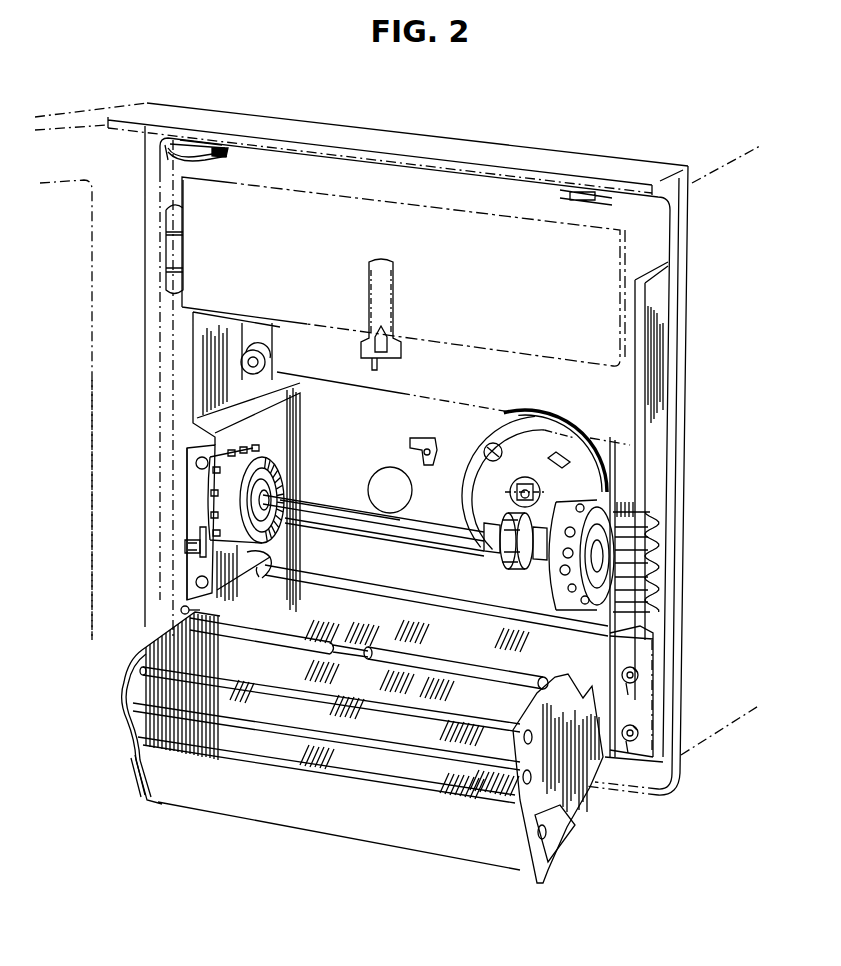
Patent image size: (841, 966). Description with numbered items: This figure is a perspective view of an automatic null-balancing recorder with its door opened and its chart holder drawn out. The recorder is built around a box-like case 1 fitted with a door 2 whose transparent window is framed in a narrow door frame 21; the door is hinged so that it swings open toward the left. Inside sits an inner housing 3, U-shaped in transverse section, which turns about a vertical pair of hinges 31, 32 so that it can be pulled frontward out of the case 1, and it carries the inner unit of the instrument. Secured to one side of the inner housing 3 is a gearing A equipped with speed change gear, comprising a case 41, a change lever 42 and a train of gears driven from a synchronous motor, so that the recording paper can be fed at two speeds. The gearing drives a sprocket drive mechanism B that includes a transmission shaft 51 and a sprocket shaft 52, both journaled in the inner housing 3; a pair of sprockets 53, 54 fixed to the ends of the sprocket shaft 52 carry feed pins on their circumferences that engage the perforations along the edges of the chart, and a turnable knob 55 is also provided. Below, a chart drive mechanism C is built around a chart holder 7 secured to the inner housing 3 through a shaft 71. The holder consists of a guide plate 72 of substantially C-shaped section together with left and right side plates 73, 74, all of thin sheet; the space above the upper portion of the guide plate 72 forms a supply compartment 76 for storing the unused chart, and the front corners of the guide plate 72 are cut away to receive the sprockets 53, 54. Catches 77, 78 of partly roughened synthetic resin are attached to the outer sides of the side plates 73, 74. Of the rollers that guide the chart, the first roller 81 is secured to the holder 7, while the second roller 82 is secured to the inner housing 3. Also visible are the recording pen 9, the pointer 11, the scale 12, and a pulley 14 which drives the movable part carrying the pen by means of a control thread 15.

The case 1 is at (193, 110).
The door 2 is at (80, 110).
The inner housing 3 is at (655, 318).
The chart holder 7 is at (363, 812).
The recording pen 9 is at (355, 359).
The pointer 11 is at (396, 272).
The scale 12 is at (277, 200).
The pulley 14 is at (544, 406).
The control thread 15 is at (437, 395).
The door frame 21 is at (92, 372).
The hinge 31 is at (184, 252).
The hinge 32 is at (181, 608).
The case 41 is at (187, 520).
The change lever 42 is at (185, 548).
The transmission shaft 51 is at (408, 540).
The sprocket shaft 52 is at (420, 524).
The sprocket 53 is at (262, 458).
The sprocket 54 is at (540, 590).
The turnable knob 55 is at (657, 567).
The shaft 71 is at (318, 588).
The guide plate 72 is at (297, 815).
The left side plate 73 is at (125, 655).
The right side plate 74 is at (570, 777).
The supply compartment 76 is at (390, 687).
The catch 77 is at (137, 782).
The catch 78 is at (563, 853).
The roller 81 is at (247, 680).
The second roller 82 is at (262, 730).
The gearing A is at (187, 488).
The sprocket drive mechanism B is at (319, 486).
The chart drive mechanism C is at (428, 812).